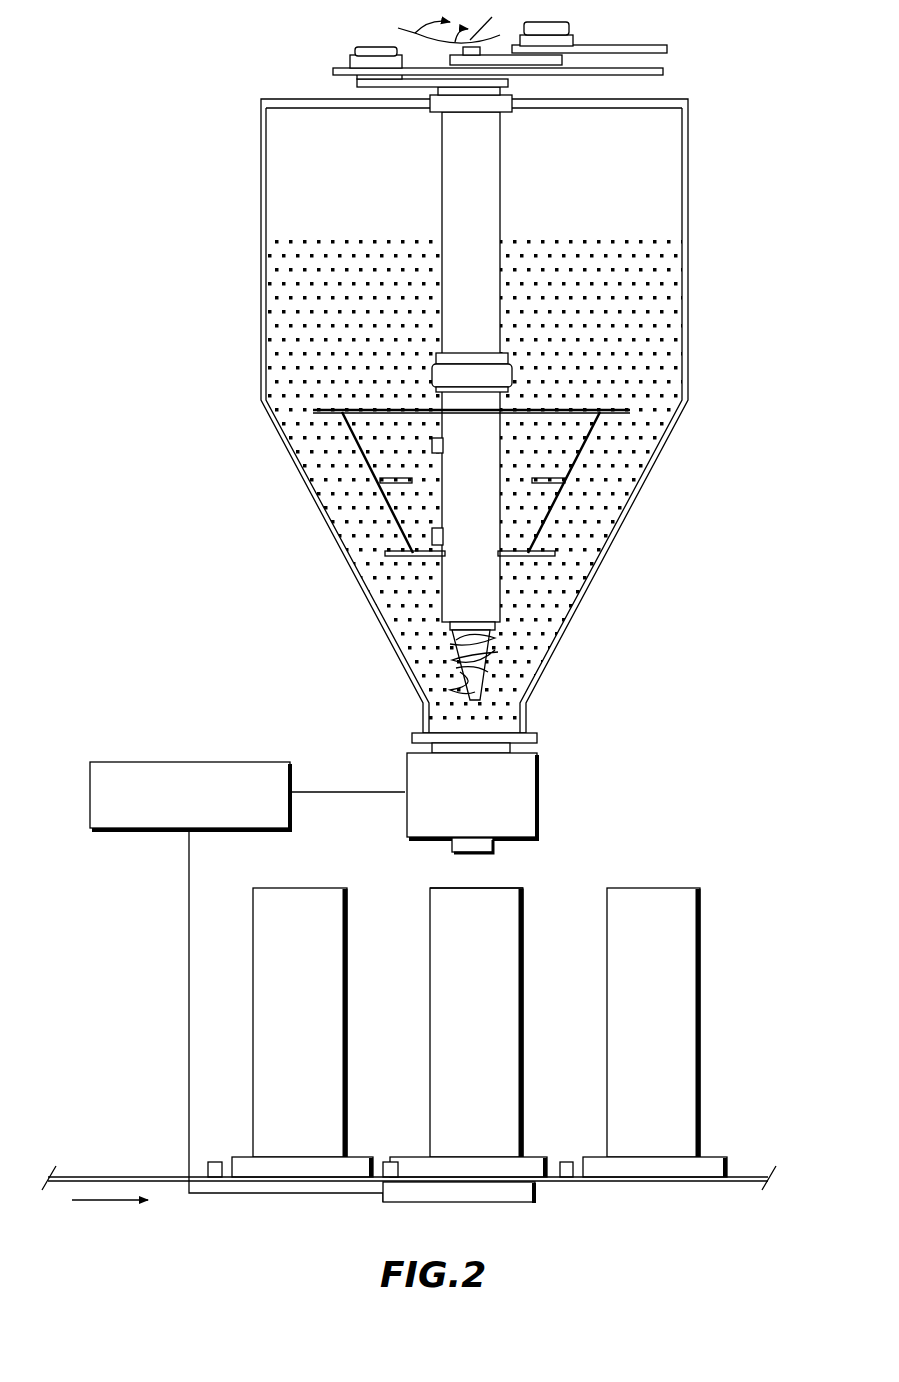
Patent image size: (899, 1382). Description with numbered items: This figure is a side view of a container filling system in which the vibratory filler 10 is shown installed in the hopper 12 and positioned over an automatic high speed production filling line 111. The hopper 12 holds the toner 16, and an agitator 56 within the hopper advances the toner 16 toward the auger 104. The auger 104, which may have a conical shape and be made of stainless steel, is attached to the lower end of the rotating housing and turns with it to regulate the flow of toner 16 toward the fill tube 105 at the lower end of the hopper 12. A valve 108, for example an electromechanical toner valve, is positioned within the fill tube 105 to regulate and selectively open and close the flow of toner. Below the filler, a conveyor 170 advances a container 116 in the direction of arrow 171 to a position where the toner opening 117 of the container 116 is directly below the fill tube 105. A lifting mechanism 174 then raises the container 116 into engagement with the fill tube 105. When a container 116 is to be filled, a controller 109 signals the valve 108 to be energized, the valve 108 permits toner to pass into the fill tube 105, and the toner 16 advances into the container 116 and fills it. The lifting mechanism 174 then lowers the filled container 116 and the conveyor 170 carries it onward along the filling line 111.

The vibratory filler 10 is at (737, 88).
The hopper 12 is at (690, 378).
The toner 16 is at (660, 282).
The agitator 56 is at (553, 507).
The auger 104 is at (495, 645).
The fill tube 105 is at (488, 846).
The valve 108 is at (530, 790).
The controller 109 is at (112, 764).
The automatic high speed production filling line 111 is at (714, 858).
The container 116 is at (348, 957).
The toner opening 117 is at (455, 888).
The conveyor 170 is at (98, 1175).
The arrow 171 is at (120, 1203).
The lifting mechanism 174 is at (520, 1190).